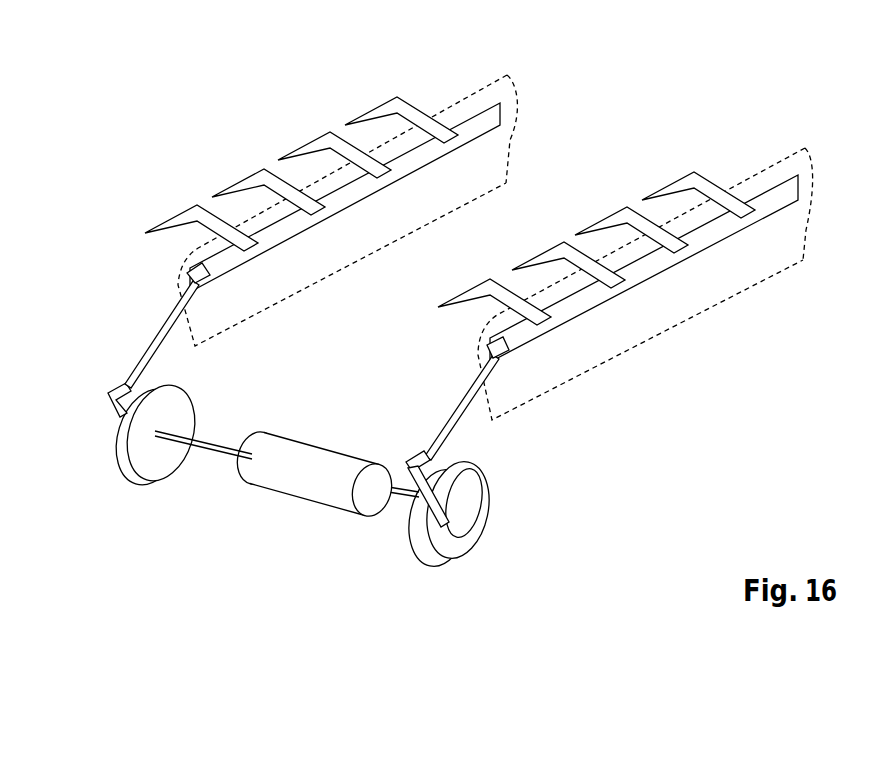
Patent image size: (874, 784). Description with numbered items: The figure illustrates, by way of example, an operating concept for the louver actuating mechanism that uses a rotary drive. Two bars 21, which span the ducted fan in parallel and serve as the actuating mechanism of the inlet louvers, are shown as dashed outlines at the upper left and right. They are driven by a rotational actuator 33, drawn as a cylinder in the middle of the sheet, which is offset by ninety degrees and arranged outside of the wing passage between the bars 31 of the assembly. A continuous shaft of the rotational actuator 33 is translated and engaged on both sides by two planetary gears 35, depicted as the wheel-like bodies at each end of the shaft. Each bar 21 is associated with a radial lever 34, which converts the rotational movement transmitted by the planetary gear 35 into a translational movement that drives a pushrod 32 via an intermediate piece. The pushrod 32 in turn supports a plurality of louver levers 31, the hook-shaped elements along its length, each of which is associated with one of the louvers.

The bar 21 is at (283, 301).
The louver lever 31 is at (165, 214).
The pushrod 32 is at (505, 111).
The rotational actuator 33 is at (329, 432).
The radial lever 34 is at (444, 492).
The planetary gear 35 is at (125, 491).